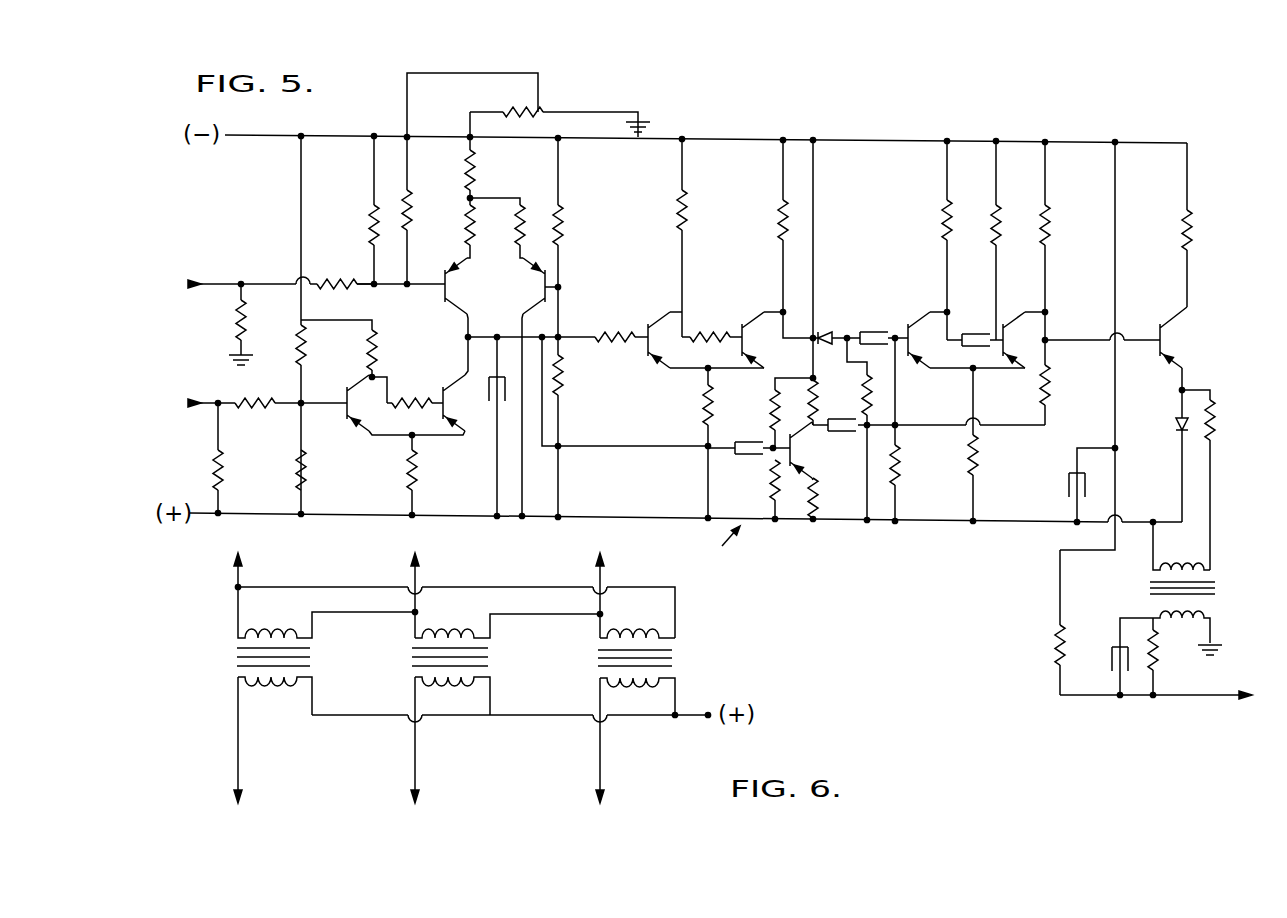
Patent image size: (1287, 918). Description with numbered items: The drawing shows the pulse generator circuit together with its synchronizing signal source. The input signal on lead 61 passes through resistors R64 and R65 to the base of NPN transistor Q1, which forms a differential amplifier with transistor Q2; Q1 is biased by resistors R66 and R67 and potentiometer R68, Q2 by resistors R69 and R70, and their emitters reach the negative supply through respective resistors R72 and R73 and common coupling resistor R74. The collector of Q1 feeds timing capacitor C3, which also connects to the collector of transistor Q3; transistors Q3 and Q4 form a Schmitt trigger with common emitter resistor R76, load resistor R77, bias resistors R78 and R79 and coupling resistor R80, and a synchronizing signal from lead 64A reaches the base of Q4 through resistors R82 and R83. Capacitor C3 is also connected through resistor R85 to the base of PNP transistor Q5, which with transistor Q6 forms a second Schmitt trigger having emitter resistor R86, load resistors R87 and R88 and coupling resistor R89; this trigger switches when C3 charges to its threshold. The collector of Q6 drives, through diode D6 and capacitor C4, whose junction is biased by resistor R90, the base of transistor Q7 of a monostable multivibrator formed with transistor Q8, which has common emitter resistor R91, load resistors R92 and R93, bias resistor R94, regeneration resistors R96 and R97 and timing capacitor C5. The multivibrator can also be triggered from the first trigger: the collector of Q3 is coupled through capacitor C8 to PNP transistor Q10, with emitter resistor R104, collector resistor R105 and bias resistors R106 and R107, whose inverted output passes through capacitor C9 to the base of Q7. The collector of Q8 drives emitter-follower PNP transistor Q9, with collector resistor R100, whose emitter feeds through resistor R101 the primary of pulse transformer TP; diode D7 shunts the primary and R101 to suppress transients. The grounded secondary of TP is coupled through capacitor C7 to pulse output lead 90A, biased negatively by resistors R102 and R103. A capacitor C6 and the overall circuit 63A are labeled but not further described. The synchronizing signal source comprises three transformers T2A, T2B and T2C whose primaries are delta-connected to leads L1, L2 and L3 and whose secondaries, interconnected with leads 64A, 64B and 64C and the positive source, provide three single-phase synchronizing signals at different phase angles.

In FIG. 5, the potentiometer R68 is at (543, 110).
In FIG. 5, the common resistor R74 is at (471, 186).
In FIG. 5, the resistor R72 is at (470, 243).
In FIG. 5, the resistor R73 is at (518, 232).
In FIG. 5, the resistor R67 is at (409, 216).
In FIG. 5, the resistor R66 is at (370, 217).
In FIG. 5, the resistor R65 is at (330, 281).
In FIG. 5, the lead 61 is at (206, 282).
In FIG. 5, the resistor R64 is at (238, 314).
In FIG. 5, the resistor R78 is at (299, 350).
In FIG. 5, the load resistor R77 is at (375, 336).
In FIG. 5, the transistor Q4 is at (344, 396).
In FIG. 5, the transistor Q3 is at (441, 396).
In FIG. 5, the resistor R80 is at (394, 406).
In FIG. 5, the lead 64A is at (219, 383).
In FIG. 6, the lead 64A is at (237, 769).
In FIG. 5, the resistor R82 is at (270, 409).
In FIG. 5, the resistor R83 is at (214, 463).
In FIG. 5, the resistor R79 is at (305, 466).
In FIG. 5, the common resistor R76 is at (433, 466).
In FIG. 5, the NPN transistor Q1 is at (445, 300).
In FIG. 5, the NPN transistor Q2 is at (548, 300).
In FIG. 5, the resistor R69 is at (561, 231).
In FIG. 5, the resistor R70 is at (562, 394).
In FIG. 5, the timing capacitor C3 is at (489, 389).
In FIG. 5, the resistor R85 is at (596, 334).
In FIG. 5, the PNP transistor Q5 is at (652, 358).
In FIG. 5, the load resistor R87 is at (685, 226).
In FIG. 5, the resistor R89 is at (740, 314).
In FIG. 5, the PNP transistor Q6 is at (745, 323).
In FIG. 5, the load resistor R88 is at (781, 239).
In FIG. 5, the resistor R86 is at (706, 403).
In FIG. 5, the capacitor C8 is at (751, 459).
In FIG. 5, the resistor R106 is at (773, 396).
In FIG. 5, the resistor R107 is at (745, 491).
In FIG. 5, the PNP transistor Q10 is at (805, 456).
In FIG. 5, the resistor R104 is at (815, 498).
In FIG. 5, the resistor R105 is at (811, 403).
In FIG. 5, the capacitor C9 is at (826, 431).
In FIG. 5, the diode D6 is at (818, 332).
In FIG. 5, the capacitor C4 is at (886, 310).
In FIG. 5, the resistor R90 is at (875, 399).
In FIG. 5, the resistor R97 is at (897, 479).
In FIG. 5, the transistor Q7 is at (909, 324).
In FIG. 5, the load resistor R92 is at (945, 227).
In FIG. 5, the timing capacitor C5 is at (972, 331).
In FIG. 5, the resistor R94 is at (993, 223).
In FIG. 5, the transistor Q8 is at (1006, 323).
In FIG. 5, the common resistor R91 is at (976, 463).
In FIG. 5, the load resistor R93 is at (1048, 223).
In FIG. 5, the resistor R96 is at (1050, 391).
In FIG. 5, the PNP transistor Q9 is at (1160, 327).
In FIG. 5, the resistor R100 is at (1189, 239).
In FIG. 5, the diode D7 is at (1174, 427).
In FIG. 5, the resistor R101 is at (1214, 429).
In FIG. 5, the capacitor C6 is at (1068, 480).
In FIG. 5, the resistor R102 is at (1056, 653).
In FIG. 5, the pulse output lead 90A is at (1191, 702).
In FIG. 5, the pulse transformer TP is at (1218, 588).
In FIG. 5, the resistor R103 is at (1156, 659).
In FIG. 5, the coupling capacitor C7 is at (1113, 672).
In FIG. 5, the circuit 63A is at (703, 539).
In FIG. 6, the lead L1 is at (243, 575).
In FIG. 6, the lead L2 is at (418, 575).
In FIG. 6, the lead L3 is at (600, 581).
In FIG. 6, the transformer T2A is at (234, 657).
In FIG. 6, the transformer T2B is at (410, 657).
In FIG. 6, the transformer T2C is at (600, 657).
In FIG. 6, the lead 64B is at (410, 774).
In FIG. 6, the lead 64C is at (598, 776).